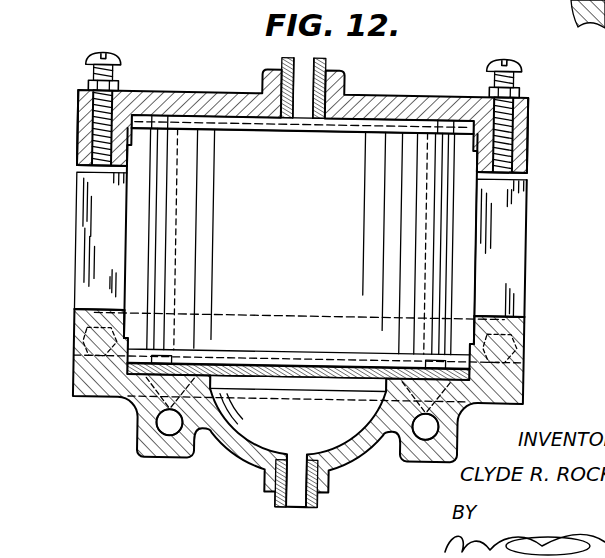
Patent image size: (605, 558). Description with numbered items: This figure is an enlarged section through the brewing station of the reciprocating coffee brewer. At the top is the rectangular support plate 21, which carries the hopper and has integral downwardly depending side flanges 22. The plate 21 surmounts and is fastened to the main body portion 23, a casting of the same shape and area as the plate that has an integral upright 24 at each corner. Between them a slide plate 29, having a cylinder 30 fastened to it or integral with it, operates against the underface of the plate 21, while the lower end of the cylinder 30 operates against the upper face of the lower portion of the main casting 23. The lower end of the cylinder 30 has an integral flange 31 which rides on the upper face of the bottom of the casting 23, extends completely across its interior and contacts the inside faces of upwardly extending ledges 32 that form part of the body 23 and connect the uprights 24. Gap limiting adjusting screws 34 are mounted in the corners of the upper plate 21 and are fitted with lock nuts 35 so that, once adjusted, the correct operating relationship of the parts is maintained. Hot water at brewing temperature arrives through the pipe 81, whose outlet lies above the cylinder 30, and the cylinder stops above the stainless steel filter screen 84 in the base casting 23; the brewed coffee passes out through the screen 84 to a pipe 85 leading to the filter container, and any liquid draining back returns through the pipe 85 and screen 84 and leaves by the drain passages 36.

The support plate 21 is at (179, 95).
The side flanges 22 is at (82, 149).
The main body portion 23 is at (115, 402).
The upright 24 is at (78, 190).
The slide plate 29 is at (375, 127).
The cylinder 30 is at (311, 222).
The flange 31 is at (354, 362).
The ledges 32 is at (78, 325).
The gap limiting adjusting screws 34 is at (82, 66).
The lock nuts 35 is at (81, 89).
The drain passages 36 is at (183, 414).
The pipe 81 is at (279, 62).
The filter screen 84 is at (250, 369).
The pipe 85 is at (291, 497).